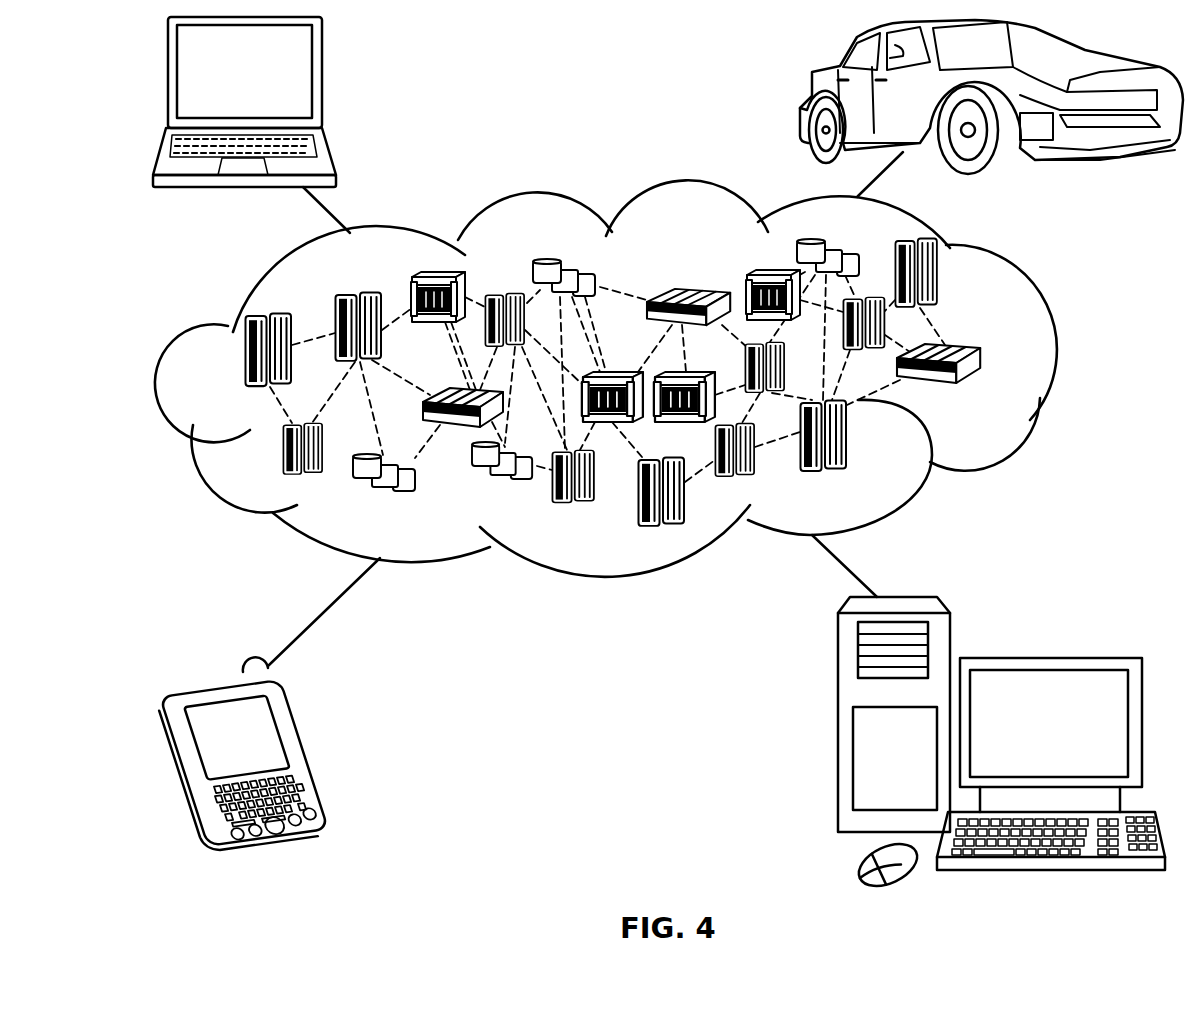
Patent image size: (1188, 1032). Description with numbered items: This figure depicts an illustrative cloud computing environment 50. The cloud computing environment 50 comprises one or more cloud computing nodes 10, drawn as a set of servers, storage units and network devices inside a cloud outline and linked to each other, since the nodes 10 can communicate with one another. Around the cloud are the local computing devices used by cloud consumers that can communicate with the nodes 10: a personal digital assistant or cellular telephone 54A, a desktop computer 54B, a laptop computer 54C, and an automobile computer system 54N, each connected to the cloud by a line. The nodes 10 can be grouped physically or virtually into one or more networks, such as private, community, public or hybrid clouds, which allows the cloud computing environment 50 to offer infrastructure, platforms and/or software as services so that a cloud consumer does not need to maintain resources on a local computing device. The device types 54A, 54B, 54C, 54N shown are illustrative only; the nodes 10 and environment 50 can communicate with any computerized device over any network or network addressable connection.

The cloud computing nodes 10 is at (998, 392).
The cloud computing environment 50 is at (1047, 363).
The personal digital assistant (PDA) or cellular telephone 54A is at (313, 755).
The desktop computer 54B is at (1047, 658).
The laptop computer 54C is at (322, 82).
The automobile computer system 54N is at (800, 98).